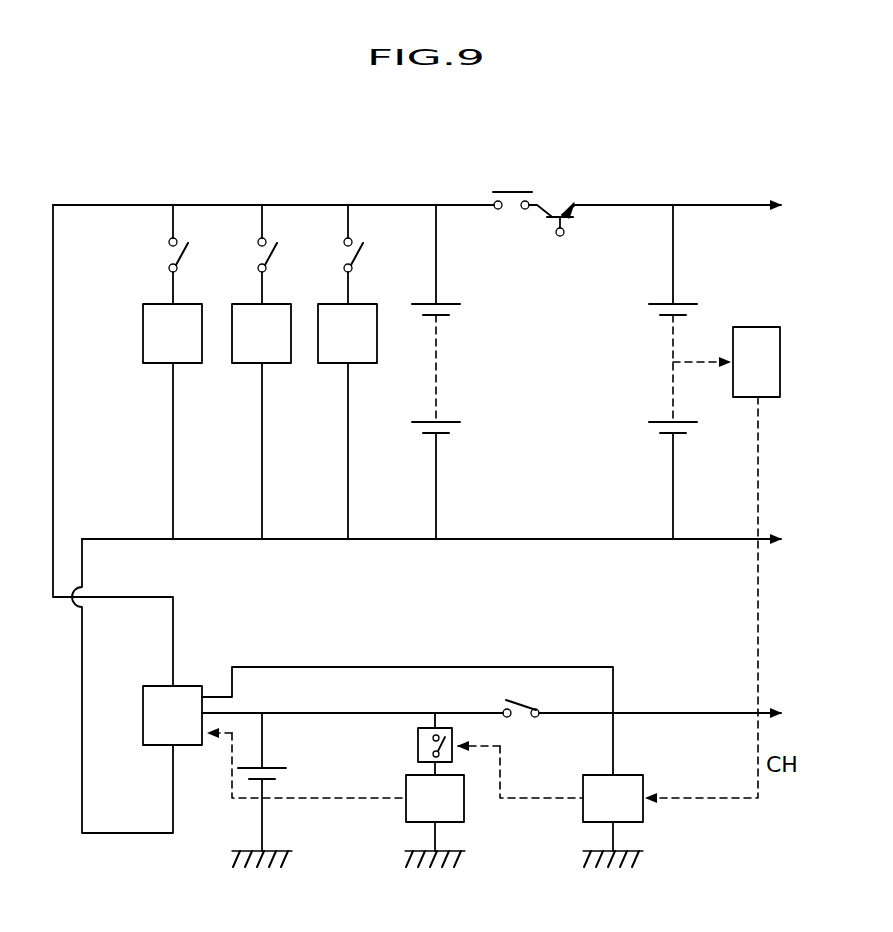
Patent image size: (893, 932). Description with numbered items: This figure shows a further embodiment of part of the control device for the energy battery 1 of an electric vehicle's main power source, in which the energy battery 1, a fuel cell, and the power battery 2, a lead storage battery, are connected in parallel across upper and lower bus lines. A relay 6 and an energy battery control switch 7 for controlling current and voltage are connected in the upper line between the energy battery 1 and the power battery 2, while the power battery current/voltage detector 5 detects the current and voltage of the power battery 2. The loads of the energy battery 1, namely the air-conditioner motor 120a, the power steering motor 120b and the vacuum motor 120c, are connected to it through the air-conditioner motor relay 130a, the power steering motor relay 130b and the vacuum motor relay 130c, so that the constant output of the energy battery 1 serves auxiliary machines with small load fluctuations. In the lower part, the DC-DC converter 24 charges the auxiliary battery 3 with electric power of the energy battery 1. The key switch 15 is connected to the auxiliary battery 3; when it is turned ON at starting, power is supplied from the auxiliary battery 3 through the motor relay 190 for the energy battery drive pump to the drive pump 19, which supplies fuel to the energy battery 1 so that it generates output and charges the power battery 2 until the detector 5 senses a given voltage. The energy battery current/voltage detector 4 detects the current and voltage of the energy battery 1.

The air-conditioner motor relay 130a is at (172, 259).
The power steering motor relay 130b is at (261, 259).
The vacuum motor relay 130c is at (347, 259).
The air-conditioner motor 120a is at (146, 365).
The power steering motor 120b is at (235, 365).
The vacuum motor 120c is at (321, 365).
The energy battery 1 is at (418, 409).
The power battery 2 is at (656, 409).
The power battery current/voltage detector 5 is at (780, 362).
The relay 6 is at (517, 191).
The energy battery control switch 7 is at (579, 196).
The DC-DC converter 24 is at (187, 685).
The auxiliary battery 3 is at (282, 775).
The motor relay for energy battery drive pump 190 is at (418, 752).
The key switch 15 is at (536, 720).
The drive pump 19 is at (464, 820).
The energy battery current/voltage detector 4 is at (643, 820).